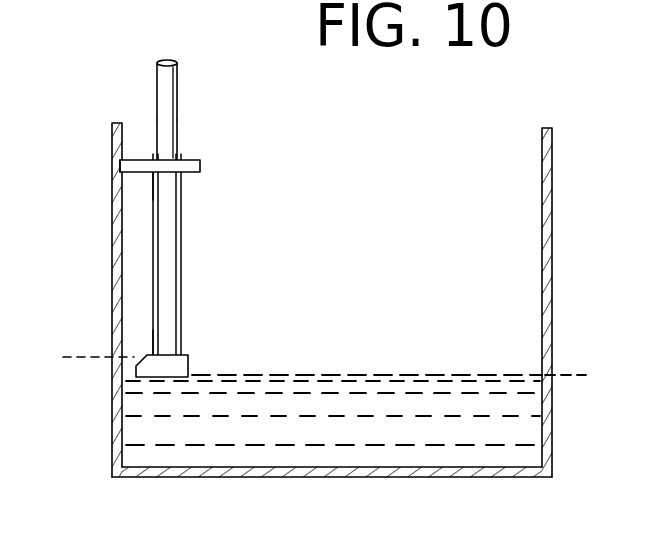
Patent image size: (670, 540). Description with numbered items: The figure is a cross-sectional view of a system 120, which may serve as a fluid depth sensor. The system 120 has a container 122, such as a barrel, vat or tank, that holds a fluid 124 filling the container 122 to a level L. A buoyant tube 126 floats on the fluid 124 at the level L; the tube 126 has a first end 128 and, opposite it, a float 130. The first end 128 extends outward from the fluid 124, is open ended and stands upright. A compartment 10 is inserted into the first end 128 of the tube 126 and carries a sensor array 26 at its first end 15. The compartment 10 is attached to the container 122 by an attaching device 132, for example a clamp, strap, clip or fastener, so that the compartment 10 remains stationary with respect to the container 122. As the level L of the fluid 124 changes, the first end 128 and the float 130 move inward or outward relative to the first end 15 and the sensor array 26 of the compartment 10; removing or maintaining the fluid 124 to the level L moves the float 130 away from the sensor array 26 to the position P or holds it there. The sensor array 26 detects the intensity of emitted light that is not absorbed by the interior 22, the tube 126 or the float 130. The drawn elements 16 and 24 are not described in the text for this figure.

The compartment 10 is at (162, 228).
The first end 15 is at (157, 61).
The lower end of sleeve 16 is at (154, 349).
The interior 22 is at (165, 117).
The sleeve upper portion 24 is at (151, 177).
The sensor array 26 is at (168, 61).
The system 120 is at (380, 300).
The container 122 is at (556, 145).
The fluid 124 is at (348, 458).
The tube 126 is at (146, 263).
The first end 128 is at (179, 154).
The float 130 is at (140, 362).
The attaching device 132 is at (121, 164).
The position P is at (91, 358).
The level L is at (572, 378).